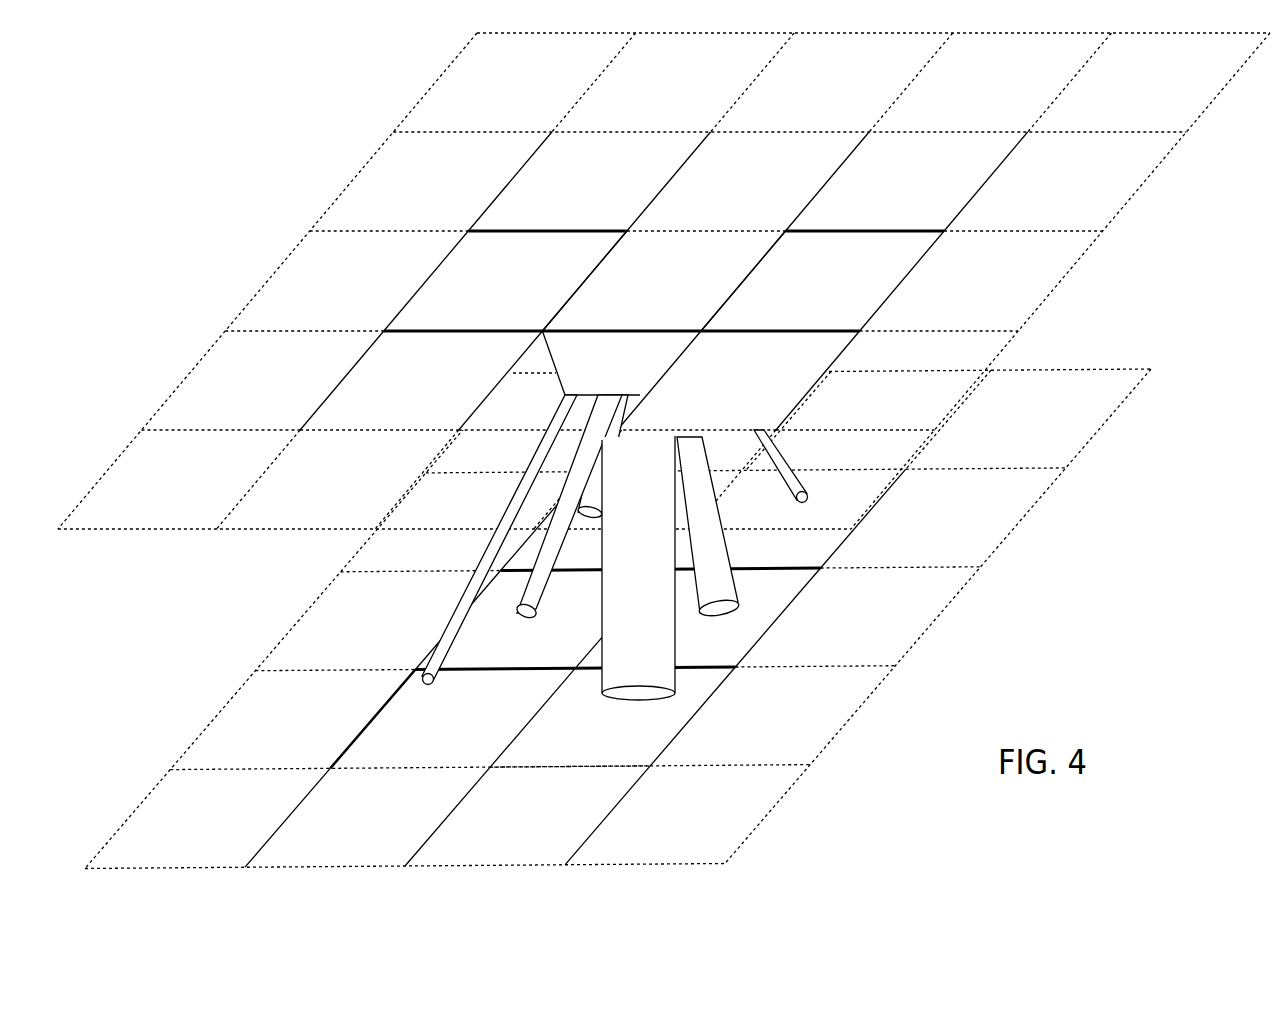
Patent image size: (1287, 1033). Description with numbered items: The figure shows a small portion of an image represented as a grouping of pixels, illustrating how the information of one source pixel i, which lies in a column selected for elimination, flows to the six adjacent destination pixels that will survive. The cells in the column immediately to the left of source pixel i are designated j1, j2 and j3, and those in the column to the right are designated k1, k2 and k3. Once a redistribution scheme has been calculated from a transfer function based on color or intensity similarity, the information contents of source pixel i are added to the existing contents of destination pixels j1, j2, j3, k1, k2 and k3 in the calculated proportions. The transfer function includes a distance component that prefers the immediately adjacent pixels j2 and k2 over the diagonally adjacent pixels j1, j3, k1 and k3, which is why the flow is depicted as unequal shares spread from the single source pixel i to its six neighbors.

The destination pixel j1 is at (589, 351).
The destination pixel k1 is at (844, 350).
The destination pixel j2 is at (505, 450).
The source pixel i is at (663, 281).
The destination pixel k2 is at (759, 449).
The destination pixel j3 is at (437, 549).
The destination pixel k3 is at (674, 549).